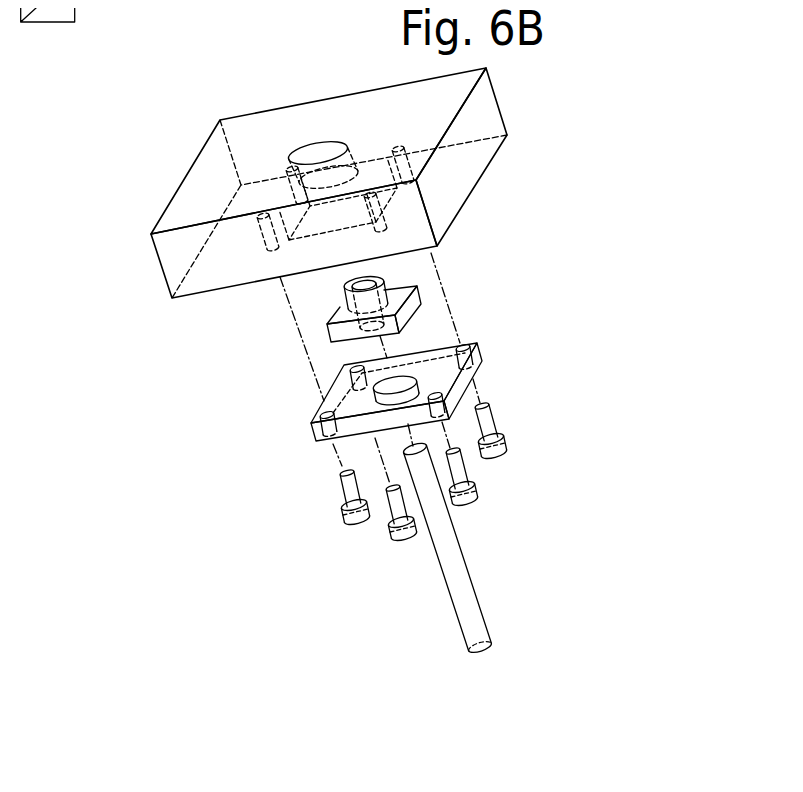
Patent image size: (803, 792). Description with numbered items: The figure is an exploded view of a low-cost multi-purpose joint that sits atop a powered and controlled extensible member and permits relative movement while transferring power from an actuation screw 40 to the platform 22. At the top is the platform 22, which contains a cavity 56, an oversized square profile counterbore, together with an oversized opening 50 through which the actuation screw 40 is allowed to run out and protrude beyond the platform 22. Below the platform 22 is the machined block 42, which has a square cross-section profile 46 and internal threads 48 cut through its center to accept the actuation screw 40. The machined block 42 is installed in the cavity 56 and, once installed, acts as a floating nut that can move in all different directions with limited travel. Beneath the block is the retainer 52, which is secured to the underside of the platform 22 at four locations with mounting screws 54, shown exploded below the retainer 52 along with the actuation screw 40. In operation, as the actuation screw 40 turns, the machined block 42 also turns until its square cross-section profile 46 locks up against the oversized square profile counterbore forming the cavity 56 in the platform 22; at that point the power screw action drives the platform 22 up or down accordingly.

The platform 22 is at (150, 232).
The actuation screw 40 is at (460, 632).
The machined block 42 is at (332, 337).
The square cross-section profile 46 is at (392, 290).
The internal threads 48 is at (343, 290).
The oversized opening 50 is at (297, 151).
The retainer 52 is at (485, 358).
The mounting screws 54 is at (505, 449).
The cavity 56 is at (418, 181).